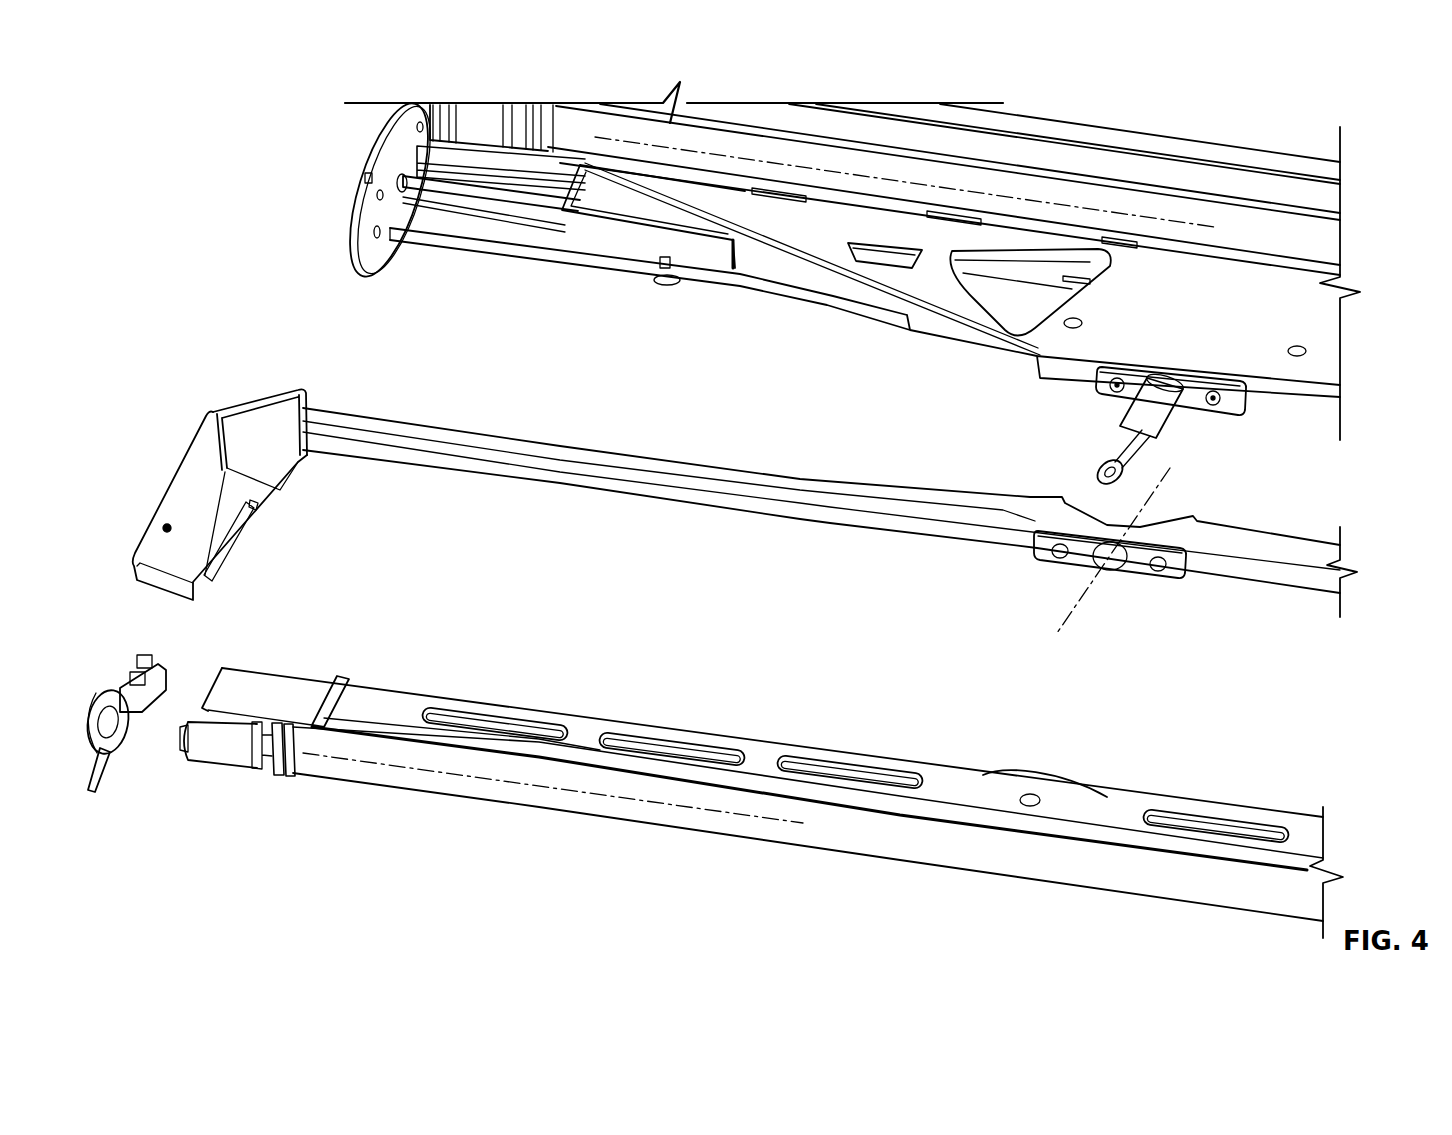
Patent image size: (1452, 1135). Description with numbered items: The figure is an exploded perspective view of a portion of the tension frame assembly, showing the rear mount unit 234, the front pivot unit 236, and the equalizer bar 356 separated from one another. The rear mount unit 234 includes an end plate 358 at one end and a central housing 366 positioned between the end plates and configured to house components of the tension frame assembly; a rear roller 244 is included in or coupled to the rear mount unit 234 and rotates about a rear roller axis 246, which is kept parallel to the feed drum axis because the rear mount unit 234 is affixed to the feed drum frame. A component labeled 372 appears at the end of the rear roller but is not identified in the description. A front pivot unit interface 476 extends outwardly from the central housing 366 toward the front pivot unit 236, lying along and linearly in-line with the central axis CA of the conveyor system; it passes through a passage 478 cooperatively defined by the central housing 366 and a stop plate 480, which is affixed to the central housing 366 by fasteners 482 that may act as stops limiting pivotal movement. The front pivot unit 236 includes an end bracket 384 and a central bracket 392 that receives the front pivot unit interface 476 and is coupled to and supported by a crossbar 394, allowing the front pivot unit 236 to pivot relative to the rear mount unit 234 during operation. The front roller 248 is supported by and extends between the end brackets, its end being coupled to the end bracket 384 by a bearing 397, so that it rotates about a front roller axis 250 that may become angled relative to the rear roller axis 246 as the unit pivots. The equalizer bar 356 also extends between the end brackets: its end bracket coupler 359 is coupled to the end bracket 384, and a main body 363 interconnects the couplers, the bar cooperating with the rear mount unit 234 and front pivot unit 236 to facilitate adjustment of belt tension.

The rear mount unit 234 is at (1110, 165).
The front pivot unit 236 is at (270, 407).
The rear roller 244 is at (1215, 207).
The rear roller axis 246 is at (795, 160).
The front roller 248 is at (870, 845).
The front roller axis 250 is at (530, 790).
The equalizer bar 356 is at (1130, 805).
The end plate 358 is at (410, 165).
The end bracket coupler 359 is at (300, 690).
The main body 363 is at (760, 752).
The central housing 366 is at (840, 232).
The end cap 372 is at (485, 117).
The end bracket 384 is at (185, 460).
The central bracket 392 is at (1040, 547).
The crossbar 394 is at (573, 478).
The bearing 397 is at (225, 752).
The front pivot unit interface 476 is at (1130, 445).
The passage 478 is at (1170, 380).
The stop plate 480 is at (1175, 385).
The fasteners 482 is at (1108, 392).
The central axis CA is at (1073, 620).